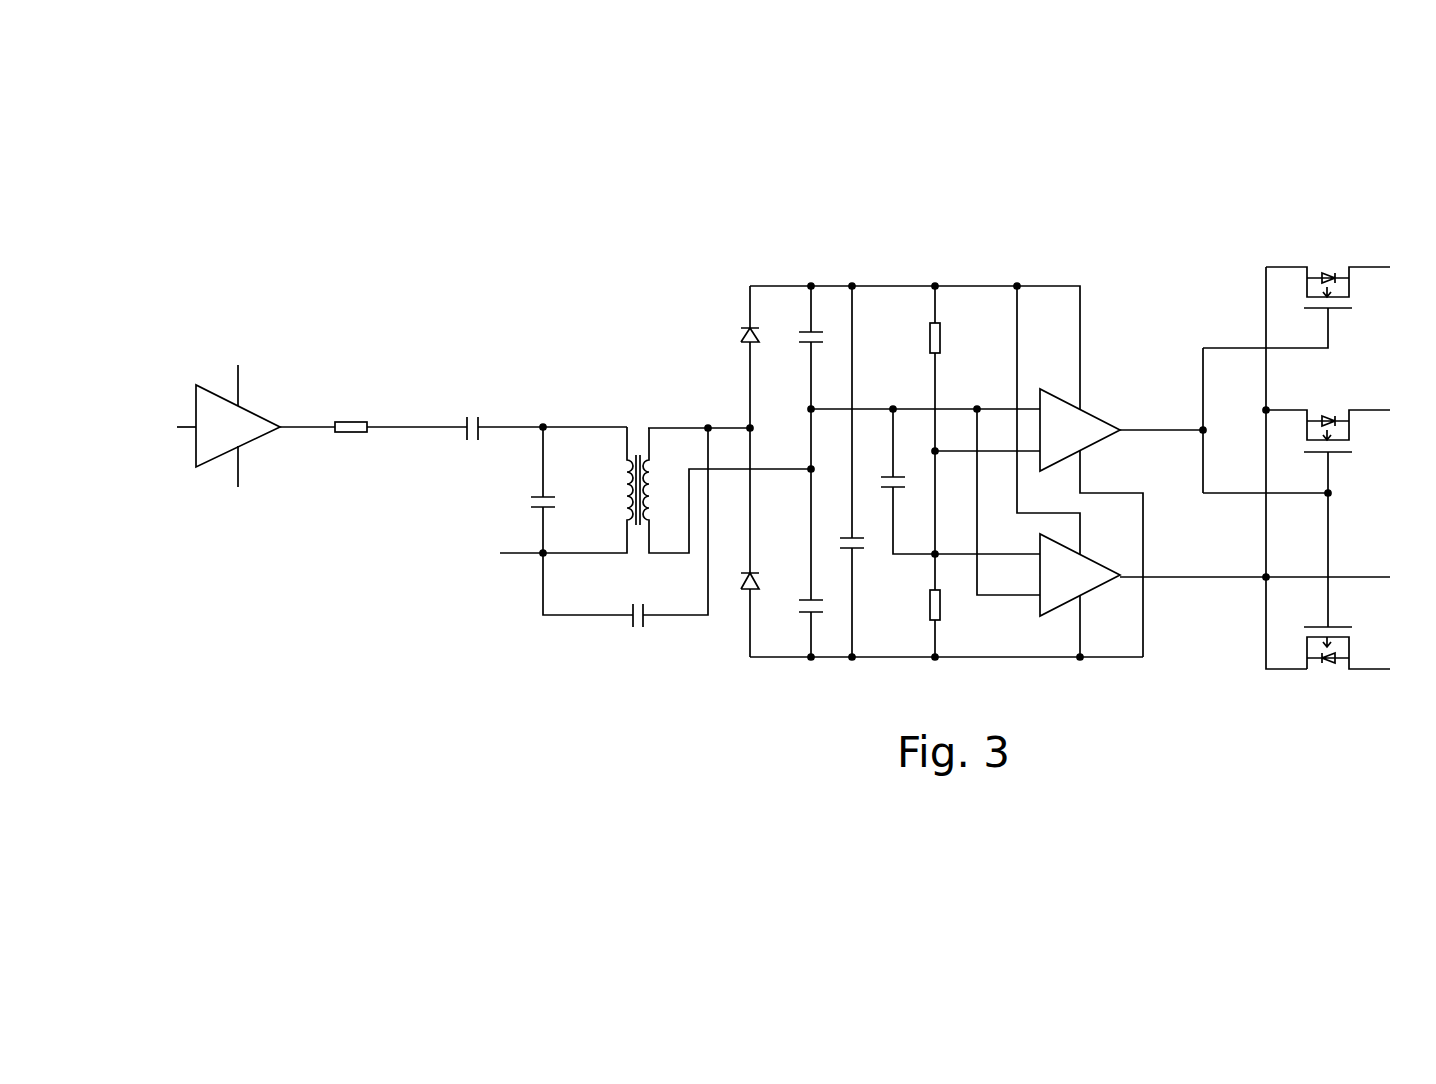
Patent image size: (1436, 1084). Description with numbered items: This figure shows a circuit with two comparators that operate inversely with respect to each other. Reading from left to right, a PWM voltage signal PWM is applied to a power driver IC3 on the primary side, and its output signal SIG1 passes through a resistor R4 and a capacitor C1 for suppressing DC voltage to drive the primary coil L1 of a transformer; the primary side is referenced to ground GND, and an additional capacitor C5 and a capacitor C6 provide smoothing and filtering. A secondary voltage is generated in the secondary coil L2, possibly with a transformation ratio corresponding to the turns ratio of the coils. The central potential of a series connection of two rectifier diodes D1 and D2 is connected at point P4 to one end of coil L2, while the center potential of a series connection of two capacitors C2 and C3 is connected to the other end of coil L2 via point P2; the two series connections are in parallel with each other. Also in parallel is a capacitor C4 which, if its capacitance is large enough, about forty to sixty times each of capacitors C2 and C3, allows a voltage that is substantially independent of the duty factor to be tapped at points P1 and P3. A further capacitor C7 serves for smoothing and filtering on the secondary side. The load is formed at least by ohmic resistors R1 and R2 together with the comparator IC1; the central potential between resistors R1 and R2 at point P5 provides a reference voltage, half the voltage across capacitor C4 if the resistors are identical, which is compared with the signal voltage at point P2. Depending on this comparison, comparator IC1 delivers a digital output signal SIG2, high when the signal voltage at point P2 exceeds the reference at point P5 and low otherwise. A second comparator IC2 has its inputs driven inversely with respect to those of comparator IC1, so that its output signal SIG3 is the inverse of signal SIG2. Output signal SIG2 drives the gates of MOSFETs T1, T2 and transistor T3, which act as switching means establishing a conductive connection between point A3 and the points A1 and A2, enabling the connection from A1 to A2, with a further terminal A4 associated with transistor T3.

The power driver IC3 is at (240, 426).
The resistor R4 is at (350, 416).
The capacitor C1 is at (470, 417).
The capacitor C5 is at (533, 490).
The capacitor C6 is at (625, 539).
The primary coil L1 is at (591, 490).
The secondary coil L2 is at (727, 490).
The rectifier diode D1 is at (736, 338).
The rectifier diode D2 is at (736, 583).
The capacitor C2 is at (803, 377).
The capacitor C3 is at (802, 563).
The capacitor C4 is at (844, 471).
The capacitor C7 is at (899, 481).
The ohmic resistor R1 is at (924, 368).
The ohmic resistor R2 is at (924, 554).
The comparator IC1 is at (1091, 522).
The second comparator IC2 is at (1080, 595).
The MOSFET T1 is at (1328, 272).
The MOSFET T2 is at (1328, 436).
The transistor T3 is at (1347, 664).
The point P1 is at (823, 276).
The point P2 is at (797, 458).
The point P3 is at (865, 647).
The point P4 is at (737, 416).
The point P5 is at (921, 544).
The signal SIG1 is at (408, 407).
The output signal SIG2 is at (1163, 419).
The output signal SIG3 is at (1255, 566).
The point A1 is at (1406, 267).
The point A2 is at (1406, 410).
The point A3 is at (1406, 577).
The point A4 is at (1406, 669).
The voltage signal PWM is at (160, 428).
The ground GND is at (380, 528).